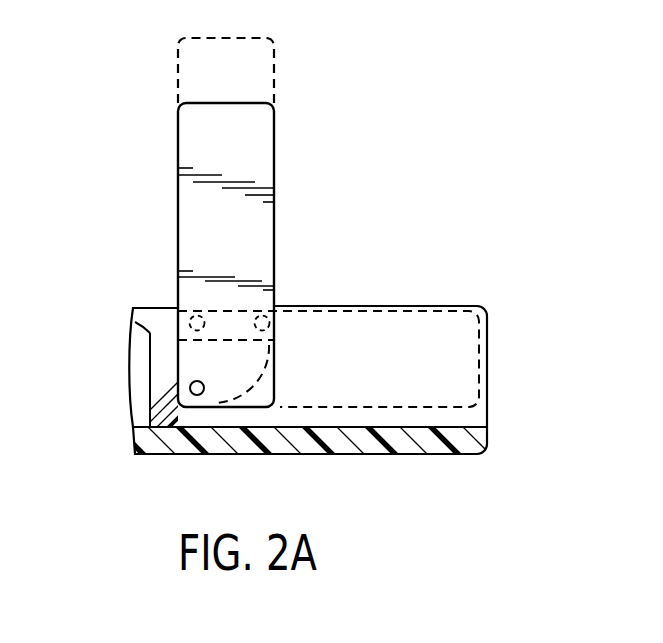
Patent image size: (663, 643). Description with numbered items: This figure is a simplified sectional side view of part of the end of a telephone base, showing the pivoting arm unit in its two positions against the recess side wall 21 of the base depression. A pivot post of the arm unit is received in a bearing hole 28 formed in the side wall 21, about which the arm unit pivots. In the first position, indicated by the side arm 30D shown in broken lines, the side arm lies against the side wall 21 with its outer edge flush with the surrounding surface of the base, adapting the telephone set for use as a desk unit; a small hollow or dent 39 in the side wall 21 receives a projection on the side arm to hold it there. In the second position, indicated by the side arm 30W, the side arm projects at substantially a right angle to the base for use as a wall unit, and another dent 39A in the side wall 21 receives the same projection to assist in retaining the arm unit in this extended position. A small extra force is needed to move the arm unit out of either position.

The side wall 21 is at (460, 375).
The side arm in wall-unit position 30W is at (192, 140).
The side arm in desk-unit position 30D is at (458, 332).
The bearing hole 28 is at (180, 304).
The dent 39A is at (276, 306).
The hollow or dent 39 is at (190, 388).